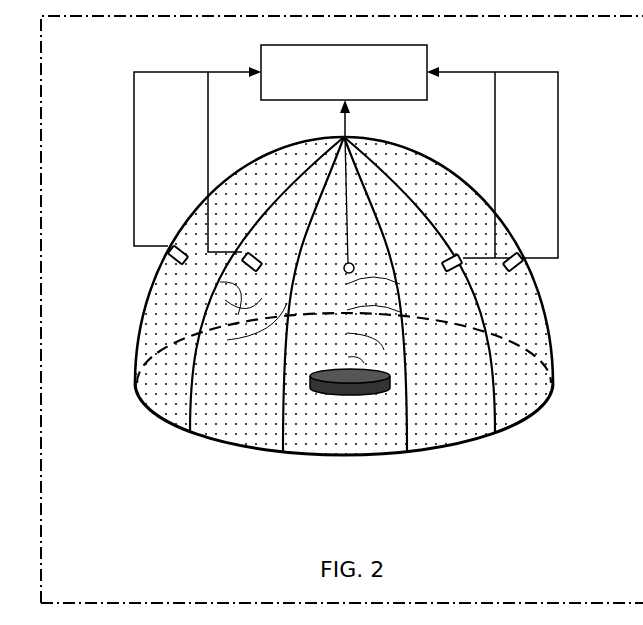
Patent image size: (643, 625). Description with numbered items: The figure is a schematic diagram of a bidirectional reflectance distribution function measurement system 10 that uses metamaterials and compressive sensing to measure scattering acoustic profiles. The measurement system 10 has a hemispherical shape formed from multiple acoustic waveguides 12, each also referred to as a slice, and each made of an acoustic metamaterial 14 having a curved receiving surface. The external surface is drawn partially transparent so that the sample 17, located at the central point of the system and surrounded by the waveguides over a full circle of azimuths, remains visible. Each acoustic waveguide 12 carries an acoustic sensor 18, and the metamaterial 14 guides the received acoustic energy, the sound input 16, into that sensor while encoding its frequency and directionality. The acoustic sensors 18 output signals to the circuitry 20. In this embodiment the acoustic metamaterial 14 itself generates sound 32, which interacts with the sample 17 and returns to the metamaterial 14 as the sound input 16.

The measurement system 10 is at (90, 71).
The acoustic waveguide 12 is at (180, 413).
The acoustic metamaterial 14 is at (200, 377).
The sound input 16 is at (370, 274).
The sample 17 is at (347, 397).
The acoustic sensor 18 is at (167, 249).
The circuitry 20 is at (409, 89).
The generated sound 32 is at (258, 360).